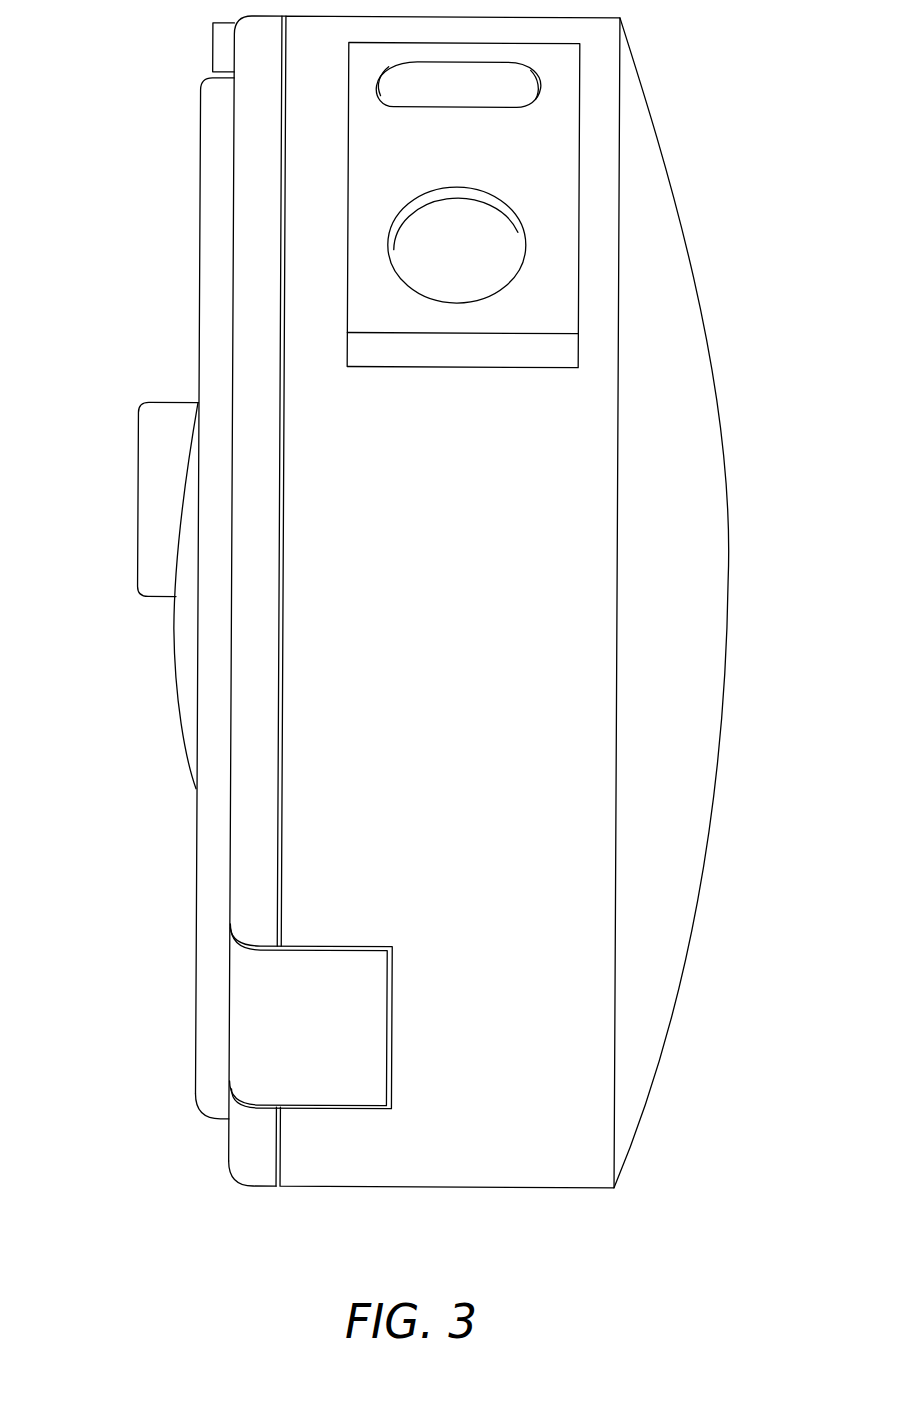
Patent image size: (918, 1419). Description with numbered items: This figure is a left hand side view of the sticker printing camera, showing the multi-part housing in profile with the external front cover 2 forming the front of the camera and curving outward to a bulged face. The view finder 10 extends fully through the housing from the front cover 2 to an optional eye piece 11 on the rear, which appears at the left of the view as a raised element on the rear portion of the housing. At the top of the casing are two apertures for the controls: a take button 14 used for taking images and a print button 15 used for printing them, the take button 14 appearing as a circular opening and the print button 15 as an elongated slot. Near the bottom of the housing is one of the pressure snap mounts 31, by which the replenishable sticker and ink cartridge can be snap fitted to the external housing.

The external front cover 2 is at (690, 497).
The view finder 10 is at (137, 505).
The eye piece 11 is at (155, 442).
The take button 14 is at (492, 255).
The print button 15 is at (507, 90).
The pressure snap mounts 31 is at (352, 990).